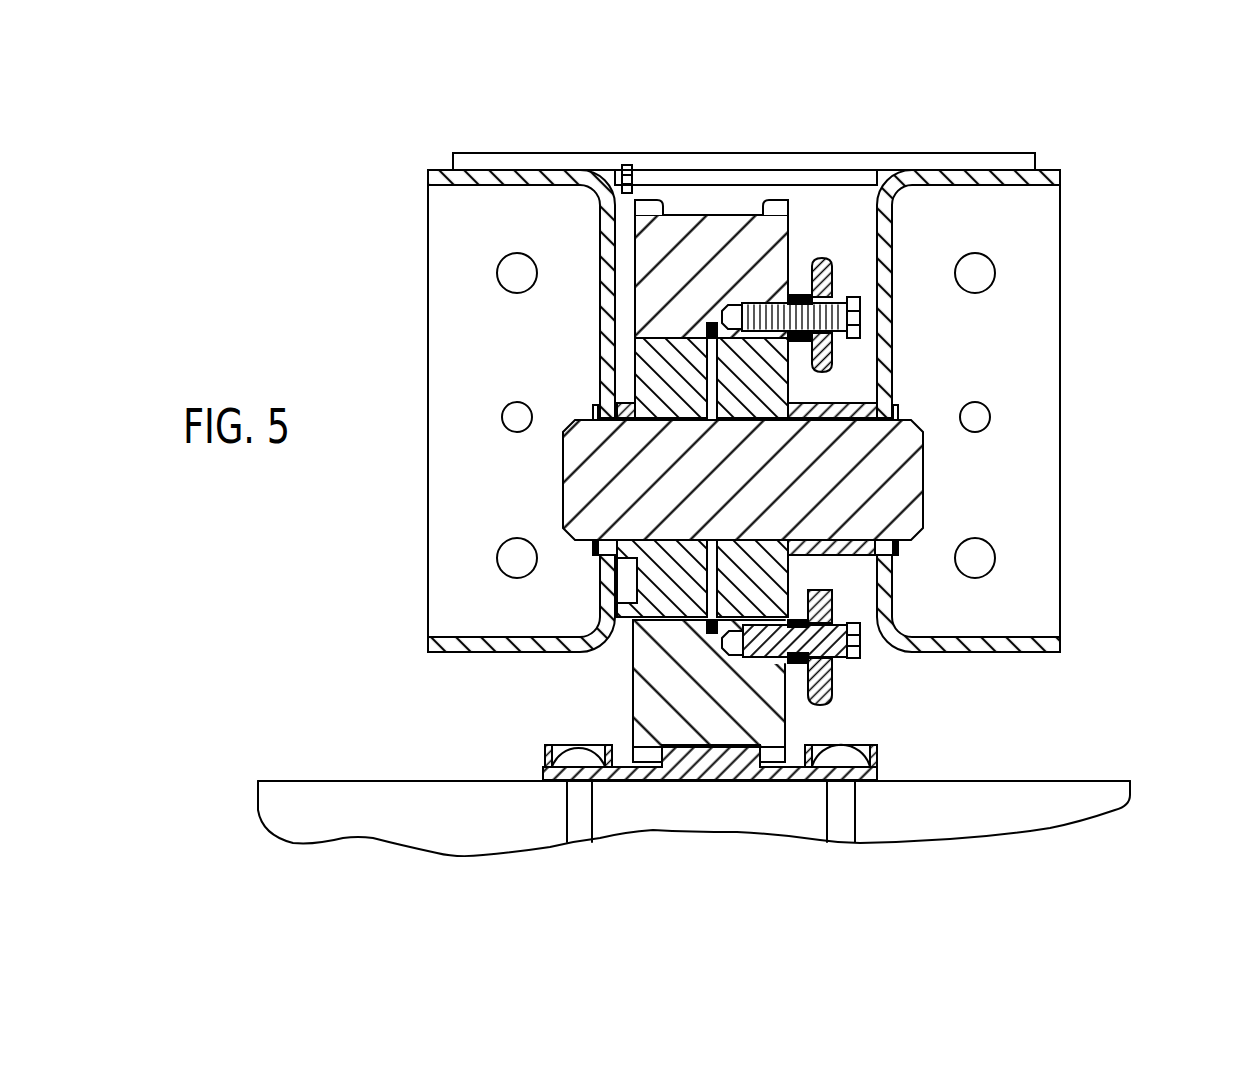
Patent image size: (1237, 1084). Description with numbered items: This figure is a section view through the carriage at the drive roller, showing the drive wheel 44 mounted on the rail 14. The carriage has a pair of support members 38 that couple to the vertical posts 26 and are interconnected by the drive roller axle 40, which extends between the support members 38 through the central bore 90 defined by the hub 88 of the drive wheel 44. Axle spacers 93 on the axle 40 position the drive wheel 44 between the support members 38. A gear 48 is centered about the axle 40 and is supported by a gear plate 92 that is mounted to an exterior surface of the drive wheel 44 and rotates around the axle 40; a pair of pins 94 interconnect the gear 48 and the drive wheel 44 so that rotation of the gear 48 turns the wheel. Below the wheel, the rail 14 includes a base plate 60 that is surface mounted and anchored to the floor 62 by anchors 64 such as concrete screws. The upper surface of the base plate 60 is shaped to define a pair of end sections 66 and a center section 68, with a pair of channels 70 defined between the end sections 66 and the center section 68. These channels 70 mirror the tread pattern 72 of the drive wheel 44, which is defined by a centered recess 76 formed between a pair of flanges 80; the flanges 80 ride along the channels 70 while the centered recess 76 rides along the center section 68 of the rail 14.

The rail 14 is at (1155, 745).
The vertical post 26 is at (1027, 153).
The support member 38 is at (1058, 376).
The drive roller axle 40 is at (925, 468).
The drive wheel 44 is at (810, 200).
The gear 48 is at (833, 350).
The base plate 60 is at (878, 779).
The floor 62 is at (1040, 820).
The anchor 64 is at (840, 838).
The end section 66 is at (612, 746).
The center section 68 is at (693, 748).
The channel 70 is at (623, 752).
The tread pattern 72 is at (790, 213).
The centered recess 76 is at (700, 214).
The flange 80 is at (650, 206).
The hub 88 is at (681, 350).
The central bore 90 is at (680, 542).
The gear plate 92 is at (800, 288).
The axle spacer 93 is at (625, 400).
The pin 94 is at (849, 298).